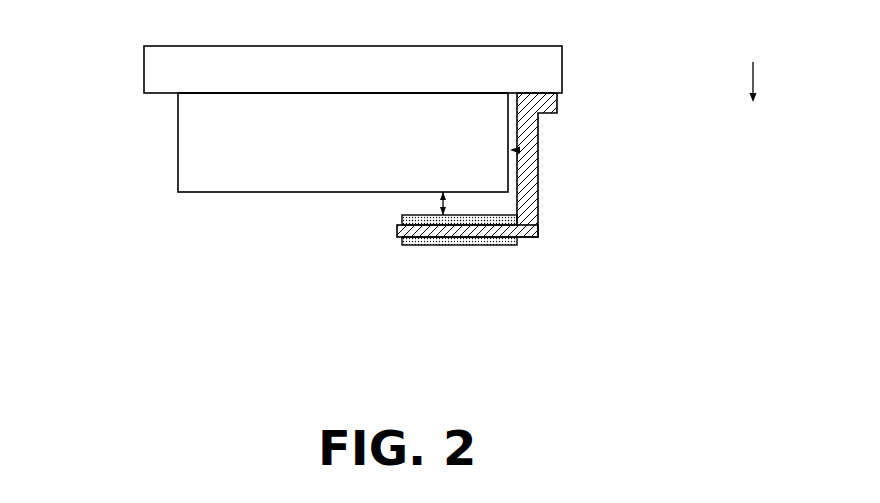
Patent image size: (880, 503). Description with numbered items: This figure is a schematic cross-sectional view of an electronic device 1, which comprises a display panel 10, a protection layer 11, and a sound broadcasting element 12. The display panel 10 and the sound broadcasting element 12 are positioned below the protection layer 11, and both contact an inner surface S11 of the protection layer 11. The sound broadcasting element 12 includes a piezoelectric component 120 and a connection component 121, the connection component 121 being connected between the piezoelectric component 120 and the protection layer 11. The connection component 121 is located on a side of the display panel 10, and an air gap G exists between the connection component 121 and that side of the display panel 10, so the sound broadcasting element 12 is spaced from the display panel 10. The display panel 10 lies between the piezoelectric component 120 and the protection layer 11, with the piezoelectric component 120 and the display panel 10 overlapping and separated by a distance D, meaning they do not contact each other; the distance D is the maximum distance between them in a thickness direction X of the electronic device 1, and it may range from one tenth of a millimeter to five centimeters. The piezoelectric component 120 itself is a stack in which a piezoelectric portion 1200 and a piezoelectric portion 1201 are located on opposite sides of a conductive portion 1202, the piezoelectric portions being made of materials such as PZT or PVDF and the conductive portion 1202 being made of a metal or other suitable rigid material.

The electronic device 1 is at (675, 348).
The display panel 10 is at (195, 150).
The protection layer 11 is at (157, 71).
The inner surface S11 is at (151, 98).
The sound broadcasting element 12 is at (501, 237).
The piezoelectric component 120 is at (471, 276).
The piezoelectric portion 1200 is at (387, 295).
The piezoelectric portion 1201 is at (417, 245).
The conductive portion 1202 is at (468, 232).
The connection component 121 is at (527, 190).
The distance D is at (441, 204).
The air gap G is at (519, 150).
The thickness direction X is at (753, 98).